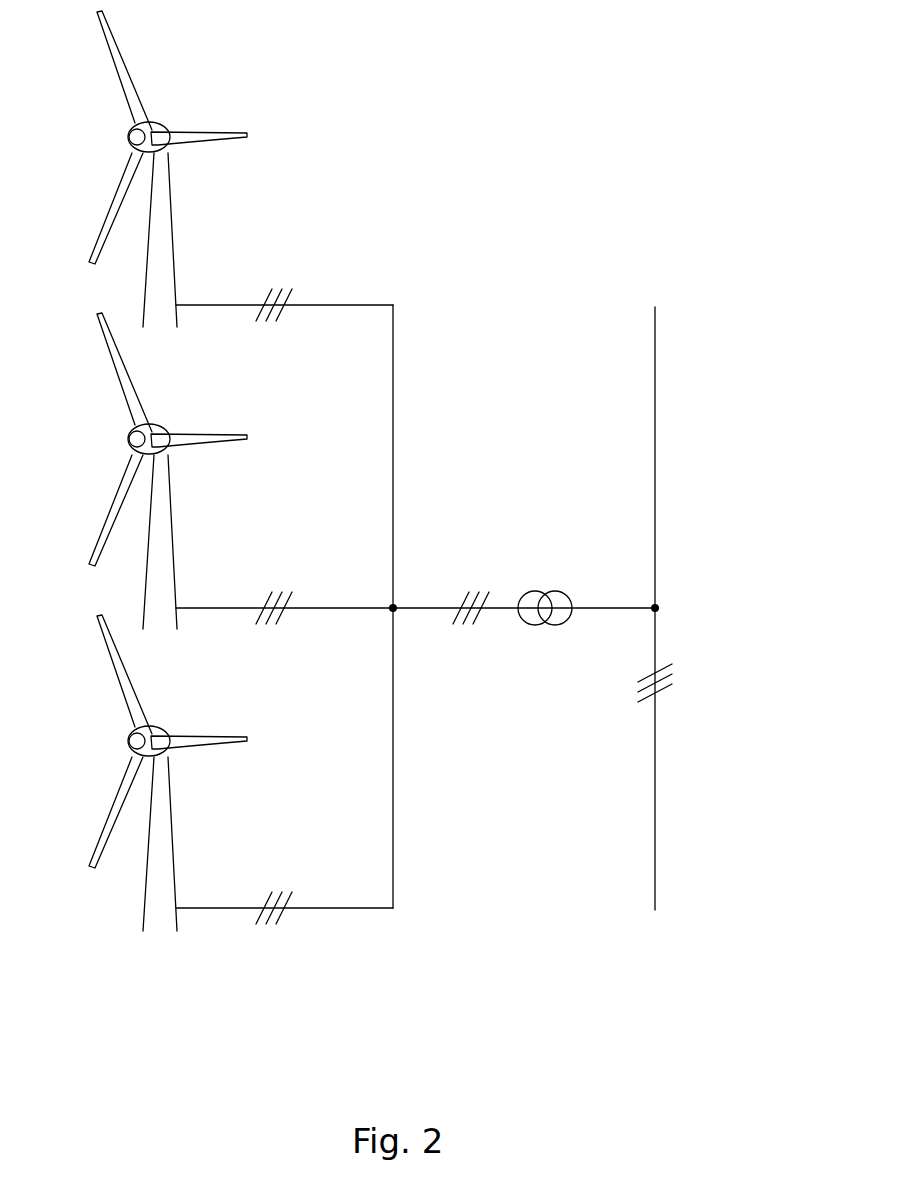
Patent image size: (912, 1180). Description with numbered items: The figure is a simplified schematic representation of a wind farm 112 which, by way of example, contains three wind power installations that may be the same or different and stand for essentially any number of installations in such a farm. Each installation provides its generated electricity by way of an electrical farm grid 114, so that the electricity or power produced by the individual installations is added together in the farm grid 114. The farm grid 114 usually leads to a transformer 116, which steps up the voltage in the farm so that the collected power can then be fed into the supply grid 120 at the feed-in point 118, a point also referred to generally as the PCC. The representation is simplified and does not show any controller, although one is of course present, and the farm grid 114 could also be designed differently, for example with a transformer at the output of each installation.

The wind farm 112 is at (466, 135).
The electrical farm grid 114 is at (415, 606).
The transformer 116 is at (549, 577).
The feed-in point 118 is at (670, 585).
The supply grid 120 is at (656, 338).